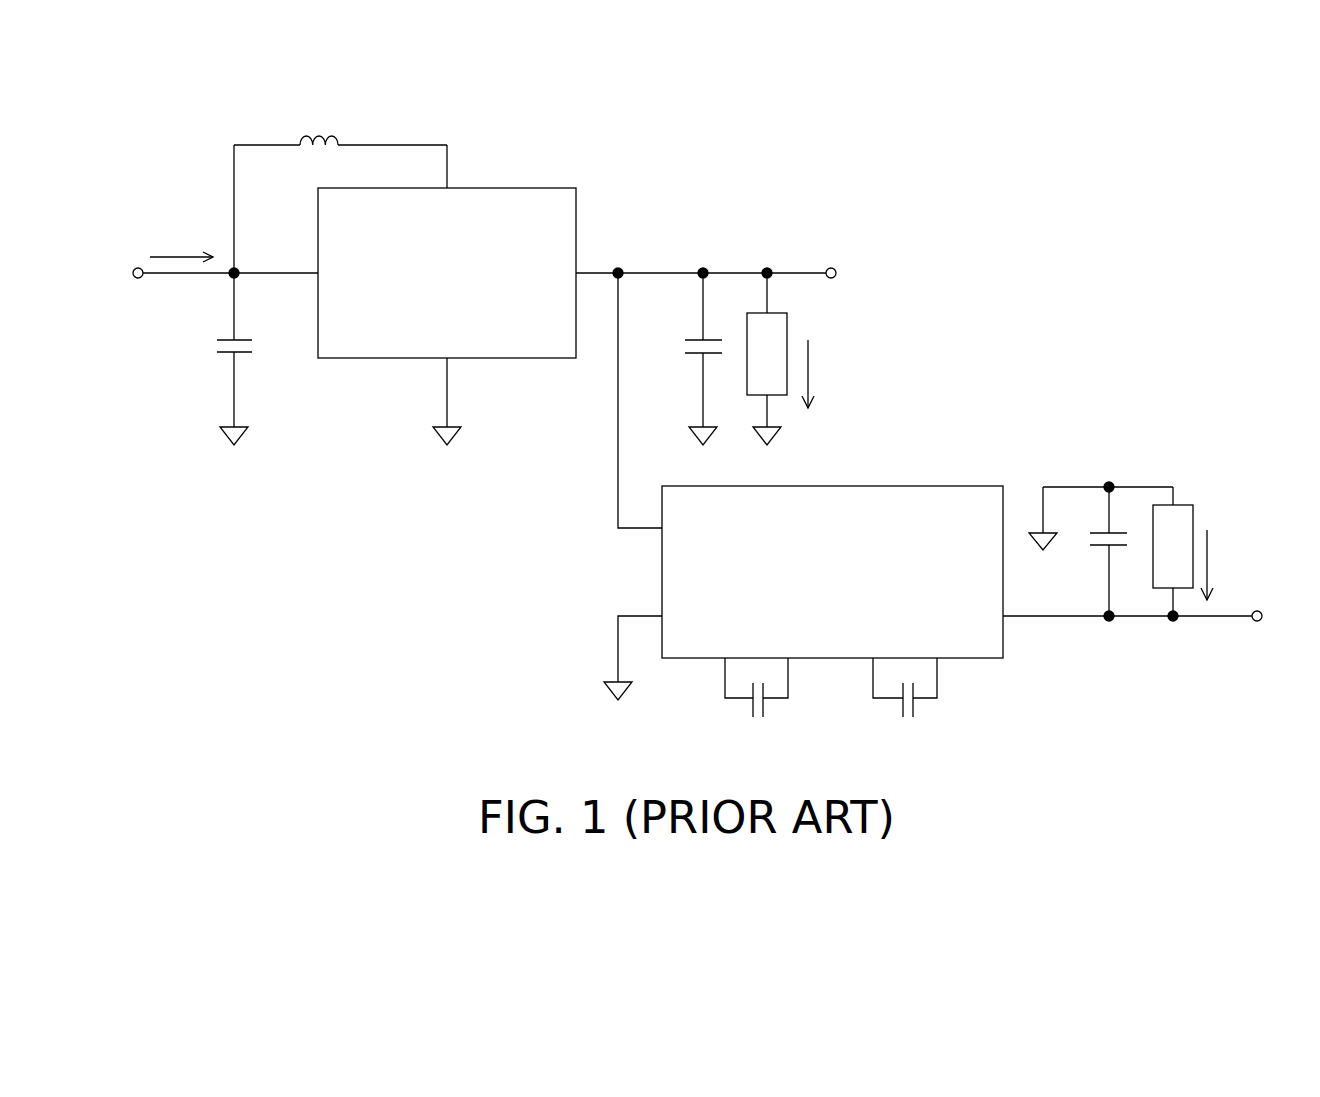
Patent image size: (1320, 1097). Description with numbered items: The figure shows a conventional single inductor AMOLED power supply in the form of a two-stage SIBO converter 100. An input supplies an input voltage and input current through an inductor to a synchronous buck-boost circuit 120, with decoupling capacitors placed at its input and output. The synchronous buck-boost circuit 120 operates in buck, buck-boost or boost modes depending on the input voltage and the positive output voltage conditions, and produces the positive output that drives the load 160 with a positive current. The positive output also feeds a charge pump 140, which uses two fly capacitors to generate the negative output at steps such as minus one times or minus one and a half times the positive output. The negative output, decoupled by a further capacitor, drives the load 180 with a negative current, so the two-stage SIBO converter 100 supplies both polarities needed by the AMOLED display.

The two-stage SIBO converter 100 is at (1300, 89).
The synchronous buck-boost circuit 120 is at (517, 188).
The charge pump 140 is at (945, 486).
The load 160 is at (788, 320).
The load 180 is at (1193, 512).